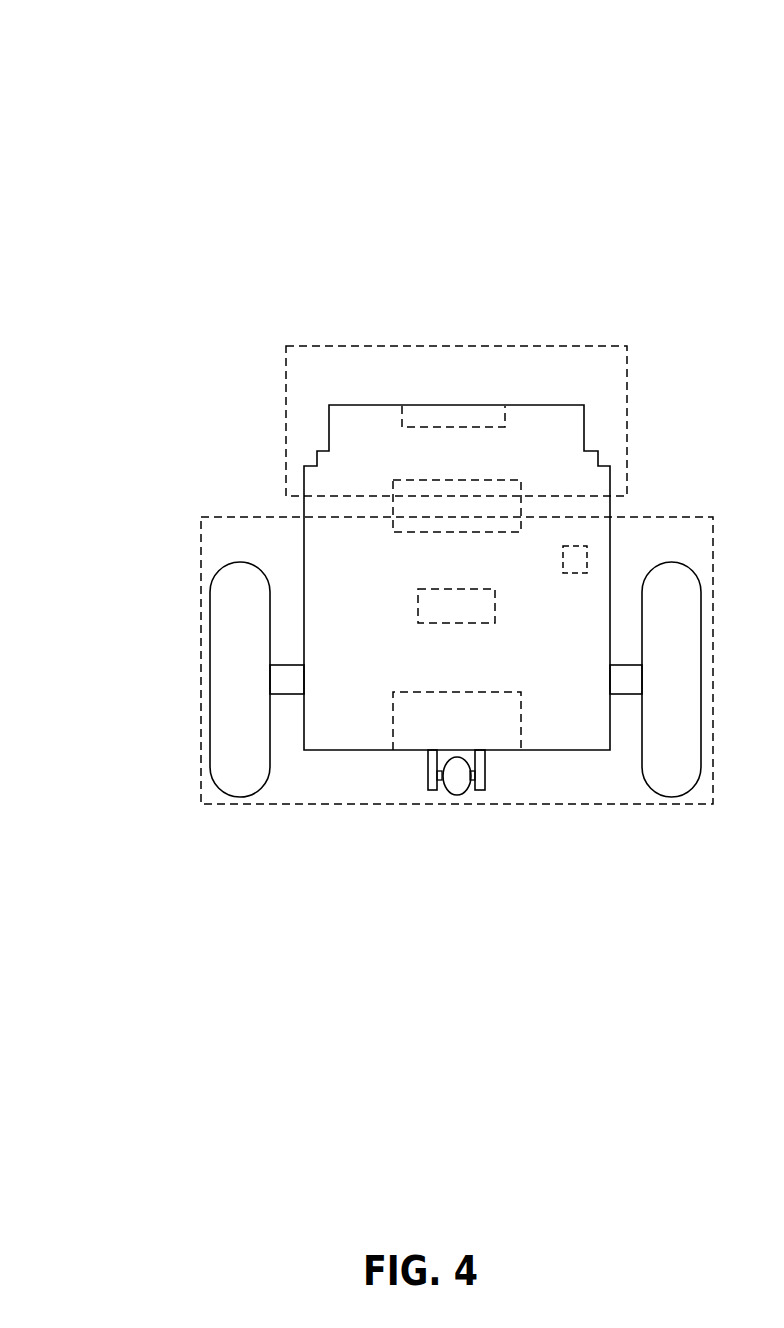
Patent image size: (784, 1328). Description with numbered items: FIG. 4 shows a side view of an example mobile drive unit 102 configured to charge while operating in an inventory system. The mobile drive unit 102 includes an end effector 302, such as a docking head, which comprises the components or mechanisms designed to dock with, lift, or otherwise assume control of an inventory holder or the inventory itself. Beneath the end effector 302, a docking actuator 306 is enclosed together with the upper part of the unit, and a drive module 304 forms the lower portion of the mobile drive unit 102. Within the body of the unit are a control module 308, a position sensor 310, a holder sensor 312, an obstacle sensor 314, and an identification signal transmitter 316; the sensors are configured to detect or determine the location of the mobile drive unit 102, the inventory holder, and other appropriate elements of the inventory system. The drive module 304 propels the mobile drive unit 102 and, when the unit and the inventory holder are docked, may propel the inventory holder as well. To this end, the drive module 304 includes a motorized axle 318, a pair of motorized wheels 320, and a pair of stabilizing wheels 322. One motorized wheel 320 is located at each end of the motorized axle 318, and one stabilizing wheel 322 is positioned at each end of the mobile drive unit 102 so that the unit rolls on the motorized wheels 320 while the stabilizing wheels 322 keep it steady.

The mobile drive unit 102 is at (117, 55).
The end effector 302 is at (530, 405).
The drive module 304 is at (201, 517).
The docking actuator 306 is at (286, 400).
The control module 308 is at (413, 532).
The position sensor 310 is at (489, 692).
The holder sensor 312 is at (402, 412).
The obstacle sensor 314 is at (418, 623).
The identification signal transmitter 316 is at (587, 562).
The motorized axle 318 is at (275, 695).
The motorized wheel 320 is at (270, 742).
The stabilizing wheel 322 is at (443, 797).